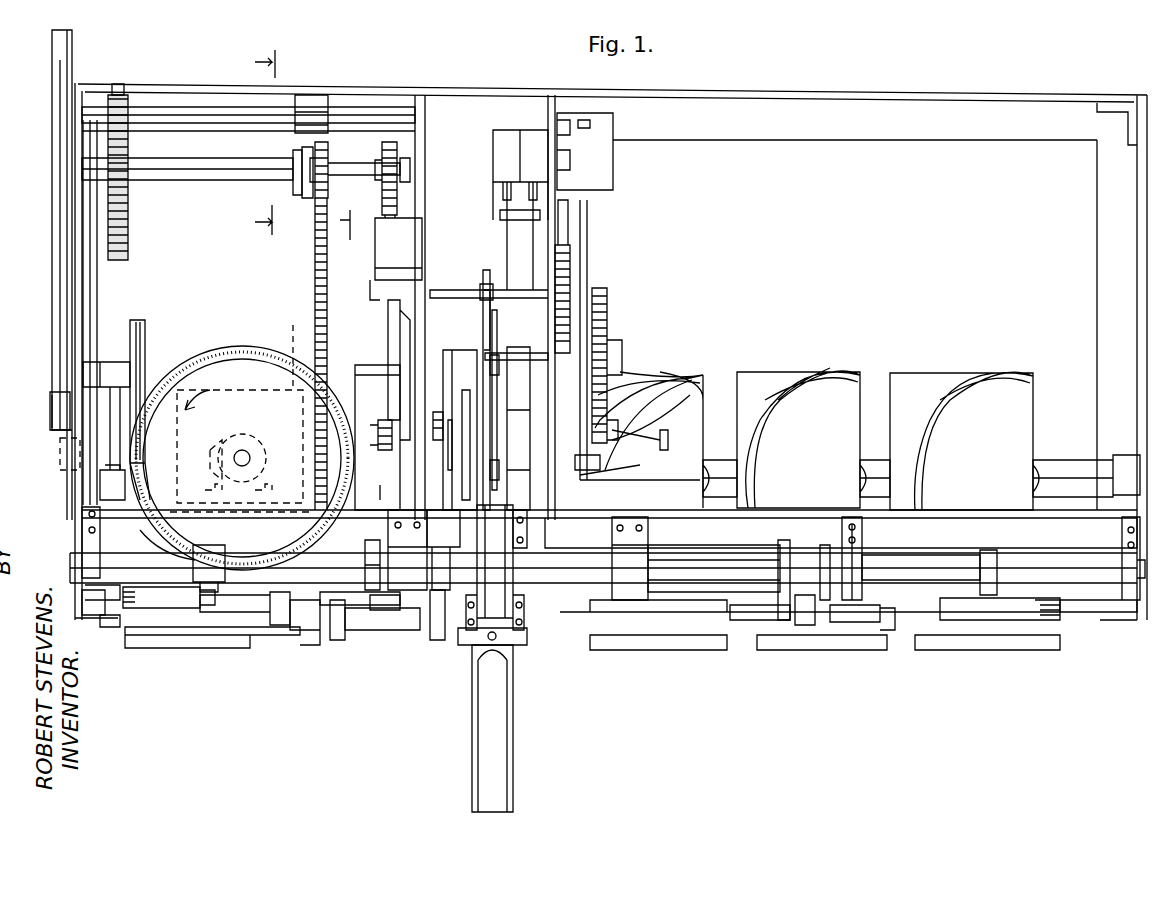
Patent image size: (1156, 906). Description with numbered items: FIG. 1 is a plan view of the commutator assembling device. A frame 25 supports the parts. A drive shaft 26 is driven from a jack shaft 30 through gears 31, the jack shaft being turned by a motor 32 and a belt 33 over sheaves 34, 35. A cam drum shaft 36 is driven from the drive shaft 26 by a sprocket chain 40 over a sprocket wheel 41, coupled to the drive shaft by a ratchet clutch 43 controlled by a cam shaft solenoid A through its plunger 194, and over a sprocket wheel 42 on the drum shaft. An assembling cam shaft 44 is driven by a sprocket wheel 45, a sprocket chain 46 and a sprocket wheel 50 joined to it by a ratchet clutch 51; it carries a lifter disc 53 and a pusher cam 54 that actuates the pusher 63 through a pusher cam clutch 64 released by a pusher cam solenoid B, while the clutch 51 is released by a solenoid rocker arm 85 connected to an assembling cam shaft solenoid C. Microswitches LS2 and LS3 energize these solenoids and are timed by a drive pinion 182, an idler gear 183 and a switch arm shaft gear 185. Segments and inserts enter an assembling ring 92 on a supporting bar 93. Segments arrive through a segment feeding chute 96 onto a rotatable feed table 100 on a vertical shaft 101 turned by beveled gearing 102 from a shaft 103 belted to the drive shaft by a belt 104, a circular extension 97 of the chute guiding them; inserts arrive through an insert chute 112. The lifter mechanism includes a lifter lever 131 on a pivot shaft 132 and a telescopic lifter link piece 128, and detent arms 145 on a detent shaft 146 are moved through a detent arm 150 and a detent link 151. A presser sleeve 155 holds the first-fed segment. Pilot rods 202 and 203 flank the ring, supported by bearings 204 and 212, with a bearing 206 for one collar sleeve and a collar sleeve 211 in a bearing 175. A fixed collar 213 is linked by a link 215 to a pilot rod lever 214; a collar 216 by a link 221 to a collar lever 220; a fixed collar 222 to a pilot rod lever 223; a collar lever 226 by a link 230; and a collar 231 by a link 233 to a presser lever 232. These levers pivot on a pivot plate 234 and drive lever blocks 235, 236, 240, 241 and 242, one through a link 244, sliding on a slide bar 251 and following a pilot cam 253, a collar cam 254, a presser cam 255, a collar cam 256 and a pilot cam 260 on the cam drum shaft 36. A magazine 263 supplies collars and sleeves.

The frame 25 is at (775, 95).
The drive shaft 26 is at (200, 170).
The jack shaft 30 is at (165, 110).
The gears 31 is at (128, 155).
The motor 32 is at (112, 362).
The belt 33 is at (60, 225).
The sheave 34 is at (52, 62).
The sheave 35 is at (50, 398).
The cam drum shaft 36 is at (718, 460).
The sprocket chain 40 is at (315, 318).
The sprocket wheel 41 is at (328, 152).
The sprocket wheel 42 is at (310, 466).
The ratchet clutch 43 is at (295, 200).
The assembling cam shaft 44 is at (620, 440).
The sprocket wheel 45 is at (398, 153).
The sprocket chain 46 is at (398, 247).
The sprocket wheel 50 is at (385, 420).
The ratchet clutch 51 is at (448, 460).
The lifter disc 53 is at (445, 345).
The pusher cam 54 is at (518, 350).
The pusher 63 is at (498, 476).
The pusher cam clutch 64 is at (580, 478).
The solenoid rocker arm 85 is at (385, 305).
The assembling ring 92 is at (497, 588).
The supporting bar 93 is at (672, 518).
The segment feeding chute 96 is at (146, 345).
The circular extension 97 is at (172, 540).
The rotatable feed table 100 is at (236, 355).
The vertical shaft 101 is at (244, 455).
The beveled gearing 102 is at (212, 445).
The shaft 103 is at (150, 483).
The belt 104 is at (98, 290).
The insert chute 112 is at (514, 690).
The lifter link piece 128 is at (482, 325).
The lifter lever 131 is at (488, 270).
The pivot shaft 132 is at (448, 290).
The detent arms 145 is at (527, 540).
The detent shaft 146 is at (449, 550).
The detent arm 150 is at (448, 470).
The detent link 151 is at (438, 412).
The presser sleeve 155 is at (752, 568).
The bearing 175 is at (848, 520).
The drive pinion 182 is at (604, 468).
The idler gear 183 is at (607, 314).
The switch arm shaft gear 185 is at (571, 270).
The plunger 194 is at (293, 150).
The reciprocating pilot rod 202 is at (82, 545).
The reciprocating pilot rod 203 is at (1100, 570).
The bearing 204 is at (92, 615).
The bearing 206 is at (410, 550).
The collar sleeve 211 is at (945, 555).
The bearing 212 is at (640, 552).
The fixed collar 213 is at (220, 550).
The pilot rod lever 214 is at (165, 635).
The link 215 is at (240, 612).
The collar 216 is at (370, 545).
The collar lever 220 is at (335, 640).
The link 221 is at (375, 630).
The fixed collar 222 is at (988, 562).
The pilot rod lever 223 is at (1035, 620).
The collar lever 226 is at (805, 650).
The link 230 is at (872, 622).
The collar 231 is at (818, 560).
The presser lever 232 is at (648, 612).
The link 233 is at (760, 620).
The pivot plate 234 is at (110, 627).
The lever block 235 is at (169, 598).
The lever block 236 is at (388, 610).
The lever block 240 is at (688, 650).
The lever block 241 is at (820, 625).
The lever block 242 is at (1010, 650).
The link 244 is at (292, 630).
The slide bar 251 is at (1085, 612).
The pilot cam 253 is at (60, 445).
The collar cam 254 is at (366, 368).
The presser cam 255 is at (648, 375).
The collar cam 256 is at (795, 364).
The pilot cam 260 is at (925, 364).
The magazine 263 is at (438, 640).
The cam shaft solenoid A is at (315, 98).
The pusher cam solenoid B is at (613, 172).
The assembling cam shaft solenoid C is at (375, 258).
The microswitch LS2 is at (528, 130).
The microswitch LS3 is at (497, 133).